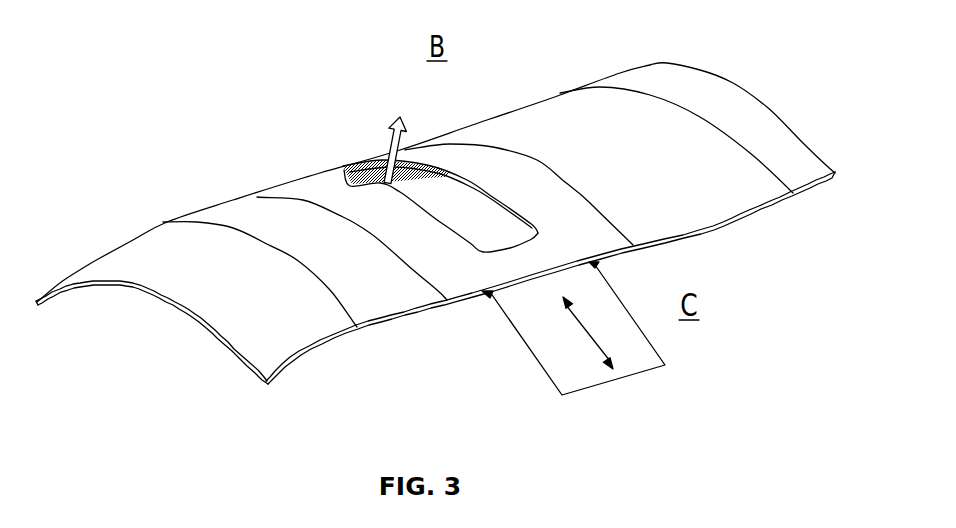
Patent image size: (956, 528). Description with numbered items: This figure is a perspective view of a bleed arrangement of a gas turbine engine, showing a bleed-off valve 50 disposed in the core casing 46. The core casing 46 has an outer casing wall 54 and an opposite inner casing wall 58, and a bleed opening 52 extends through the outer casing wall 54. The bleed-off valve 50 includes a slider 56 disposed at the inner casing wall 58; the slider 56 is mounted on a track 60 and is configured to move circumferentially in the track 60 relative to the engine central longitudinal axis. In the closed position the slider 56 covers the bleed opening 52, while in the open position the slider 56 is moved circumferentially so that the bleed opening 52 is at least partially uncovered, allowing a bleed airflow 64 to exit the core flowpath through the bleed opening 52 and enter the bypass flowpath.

The bleed-off valve 50 is at (149, 71).
The core casing 46 is at (578, 120).
The bleed opening 52 is at (473, 180).
The outer casing wall 54 is at (748, 177).
The slider 56 is at (572, 355).
The inner casing wall 58 is at (328, 343).
The track 60 is at (487, 303).
The bleed airflow 64 is at (388, 147).